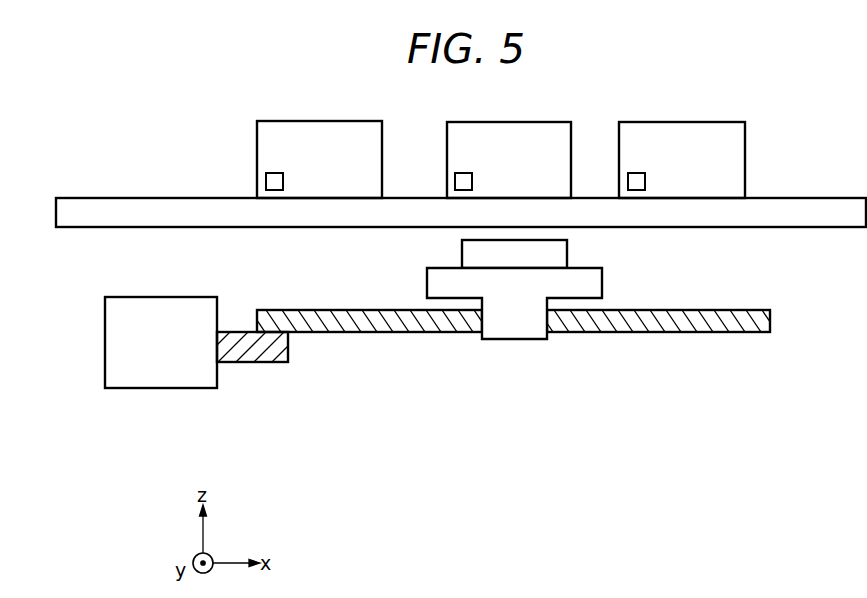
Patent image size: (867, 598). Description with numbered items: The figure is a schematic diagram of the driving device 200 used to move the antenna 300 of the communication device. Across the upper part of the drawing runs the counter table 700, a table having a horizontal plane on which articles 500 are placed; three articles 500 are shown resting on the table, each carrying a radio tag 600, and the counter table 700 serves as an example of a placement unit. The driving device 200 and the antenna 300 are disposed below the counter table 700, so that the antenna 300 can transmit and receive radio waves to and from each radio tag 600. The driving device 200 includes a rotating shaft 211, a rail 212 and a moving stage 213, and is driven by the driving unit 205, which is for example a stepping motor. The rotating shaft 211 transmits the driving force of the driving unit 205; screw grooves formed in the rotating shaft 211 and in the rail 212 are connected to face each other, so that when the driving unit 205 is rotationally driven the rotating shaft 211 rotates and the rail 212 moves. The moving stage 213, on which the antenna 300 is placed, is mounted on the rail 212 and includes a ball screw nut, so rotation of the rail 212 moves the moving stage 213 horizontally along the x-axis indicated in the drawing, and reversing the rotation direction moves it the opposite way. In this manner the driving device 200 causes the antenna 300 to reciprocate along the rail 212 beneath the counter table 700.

The driving device 200 is at (432, 369).
The driving unit 205 is at (158, 389).
The rotating shaft 211 is at (248, 363).
The rail 212 is at (395, 333).
The moving stage 213 is at (510, 340).
The antenna 300 is at (569, 250).
The article 500 is at (315, 121).
The radio tag 600 is at (266, 181).
The counter table 700 is at (798, 198).